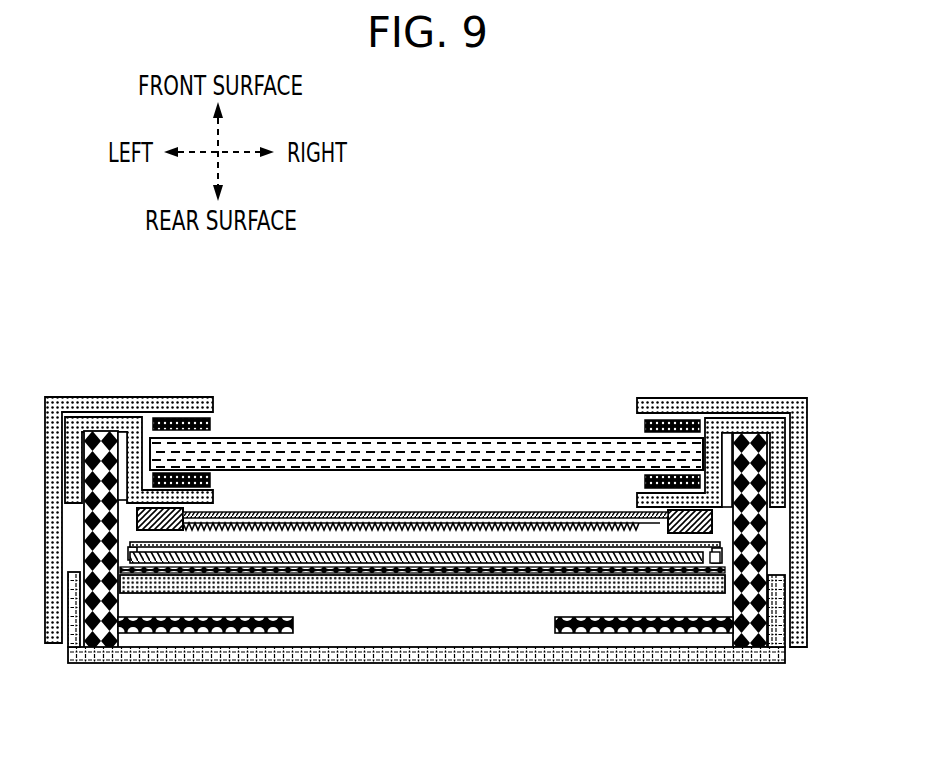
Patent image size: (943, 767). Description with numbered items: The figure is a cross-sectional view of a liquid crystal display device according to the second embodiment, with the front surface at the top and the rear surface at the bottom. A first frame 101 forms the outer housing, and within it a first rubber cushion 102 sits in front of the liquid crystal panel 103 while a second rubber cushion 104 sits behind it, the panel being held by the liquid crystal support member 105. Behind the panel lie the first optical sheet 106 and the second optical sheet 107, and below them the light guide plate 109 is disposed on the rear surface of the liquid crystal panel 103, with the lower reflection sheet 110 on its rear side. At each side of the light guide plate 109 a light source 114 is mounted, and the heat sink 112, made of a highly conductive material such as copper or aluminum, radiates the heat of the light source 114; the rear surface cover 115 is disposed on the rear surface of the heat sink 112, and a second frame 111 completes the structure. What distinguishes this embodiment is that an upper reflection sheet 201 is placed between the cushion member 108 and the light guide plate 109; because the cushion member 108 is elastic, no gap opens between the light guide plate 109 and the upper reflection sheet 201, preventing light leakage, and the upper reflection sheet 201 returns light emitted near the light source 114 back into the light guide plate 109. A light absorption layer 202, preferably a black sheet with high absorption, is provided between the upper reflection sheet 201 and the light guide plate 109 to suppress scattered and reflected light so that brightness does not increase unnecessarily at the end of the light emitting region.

The first frame 101 is at (97, 403).
The first rubber cushion 102 is at (210, 422).
The liquid crystal panel 103 is at (447, 450).
The second rubber cushion 104 is at (663, 483).
The liquid crystal support member 105 is at (210, 497).
The first optical sheet 106 is at (223, 513).
The second optical sheet 107 is at (572, 548).
The cushion member 108 is at (140, 535).
The light guide plate 109 is at (503, 592).
The lower reflection sheet 110 is at (160, 540).
The second frame 111 is at (692, 580).
The heat sink 112 is at (183, 630).
The light source 114 is at (668, 512).
The rear surface cover 115 is at (396, 664).
The upper reflection sheet 201 is at (698, 518).
The light absorption layer 202 is at (190, 530).